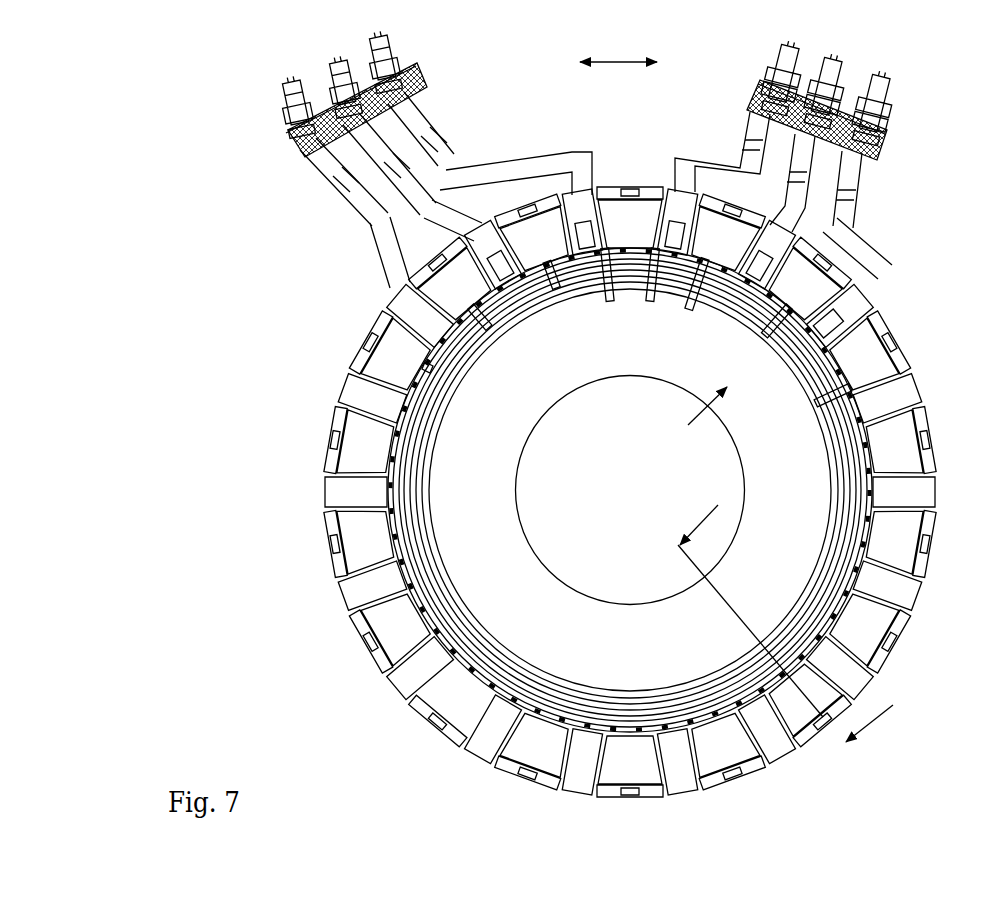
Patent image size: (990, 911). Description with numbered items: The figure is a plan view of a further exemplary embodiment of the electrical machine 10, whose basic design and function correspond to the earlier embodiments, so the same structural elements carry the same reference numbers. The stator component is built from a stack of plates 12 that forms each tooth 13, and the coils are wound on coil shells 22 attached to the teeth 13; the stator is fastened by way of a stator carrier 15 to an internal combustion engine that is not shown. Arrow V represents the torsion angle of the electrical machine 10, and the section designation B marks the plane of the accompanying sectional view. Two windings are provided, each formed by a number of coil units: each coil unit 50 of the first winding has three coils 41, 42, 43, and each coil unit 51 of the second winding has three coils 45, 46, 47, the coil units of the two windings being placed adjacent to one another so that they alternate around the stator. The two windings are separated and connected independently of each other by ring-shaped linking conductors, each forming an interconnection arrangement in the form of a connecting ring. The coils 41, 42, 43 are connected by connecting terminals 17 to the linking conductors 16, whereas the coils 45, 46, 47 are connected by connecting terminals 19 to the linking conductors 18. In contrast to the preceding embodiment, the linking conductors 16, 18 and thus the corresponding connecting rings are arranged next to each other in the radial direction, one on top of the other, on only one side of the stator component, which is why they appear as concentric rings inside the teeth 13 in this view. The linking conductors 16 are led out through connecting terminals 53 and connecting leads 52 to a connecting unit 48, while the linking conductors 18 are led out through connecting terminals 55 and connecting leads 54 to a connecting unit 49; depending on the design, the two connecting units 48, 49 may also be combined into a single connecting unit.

The electrical machine 10 is at (520, 805).
The stack of plates 12 is at (582, 768).
The tooth 13 is at (405, 680).
The stator carrier 15 is at (563, 580).
The linking conductors 16 is at (522, 300).
The connecting terminals 17 is at (488, 330).
The linking conductors 18 is at (432, 368).
The connecting terminals 19 is at (693, 286).
The coil shells 22 is at (440, 722).
The coil 41 is at (462, 289).
The coil 42 is at (539, 250).
The coil 43 is at (640, 228).
The coil 45 is at (734, 245).
The coil 46 is at (819, 288).
The coil 47 is at (879, 365).
The connecting unit 48 is at (418, 84).
The connecting unit 49 is at (837, 82).
The coil unit 50 is at (547, 195).
The coil unit 51 is at (696, 416).
The connecting leads 52 is at (490, 165).
The connecting terminals 53 is at (522, 318).
The connecting leads 54 is at (740, 170).
The connecting terminals 55 is at (668, 200).
The section line B is at (793, 617).
The arrow V is at (618, 58).